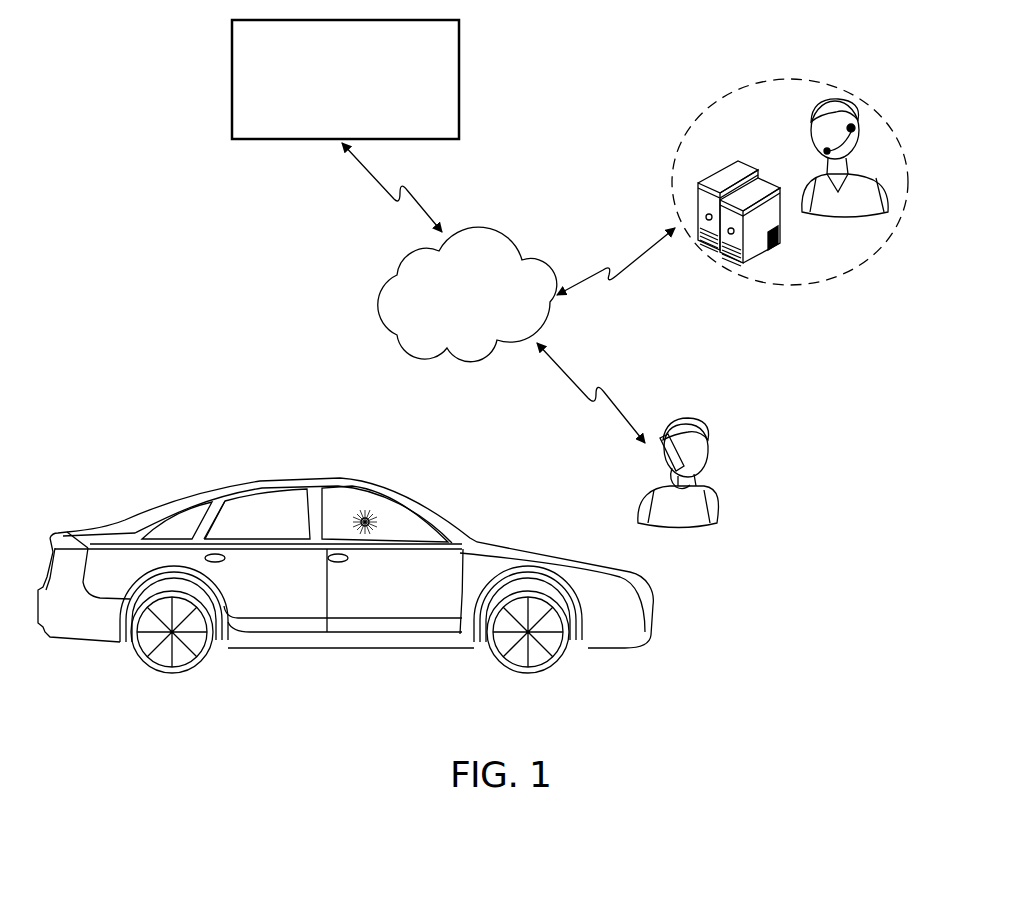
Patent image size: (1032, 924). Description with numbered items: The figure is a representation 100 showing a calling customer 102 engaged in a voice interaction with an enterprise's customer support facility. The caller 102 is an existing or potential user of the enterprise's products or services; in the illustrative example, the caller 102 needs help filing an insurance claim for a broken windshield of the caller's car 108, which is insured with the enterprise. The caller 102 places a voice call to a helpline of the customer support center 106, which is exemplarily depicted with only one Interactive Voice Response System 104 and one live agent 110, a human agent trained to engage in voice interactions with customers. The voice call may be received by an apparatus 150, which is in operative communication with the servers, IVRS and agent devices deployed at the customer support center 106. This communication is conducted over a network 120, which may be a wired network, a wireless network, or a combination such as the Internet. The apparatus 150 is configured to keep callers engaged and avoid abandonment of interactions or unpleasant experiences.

The representation 100 is at (810, 662).
The calling customer 102 is at (708, 490).
The Interactive Voice Response System 104 is at (745, 268).
The customer support center 106 is at (788, 79).
The caller's car 108 is at (437, 512).
The live agent 110 is at (862, 116).
The network 120 is at (467, 294).
The apparatus 150 is at (345, 79).